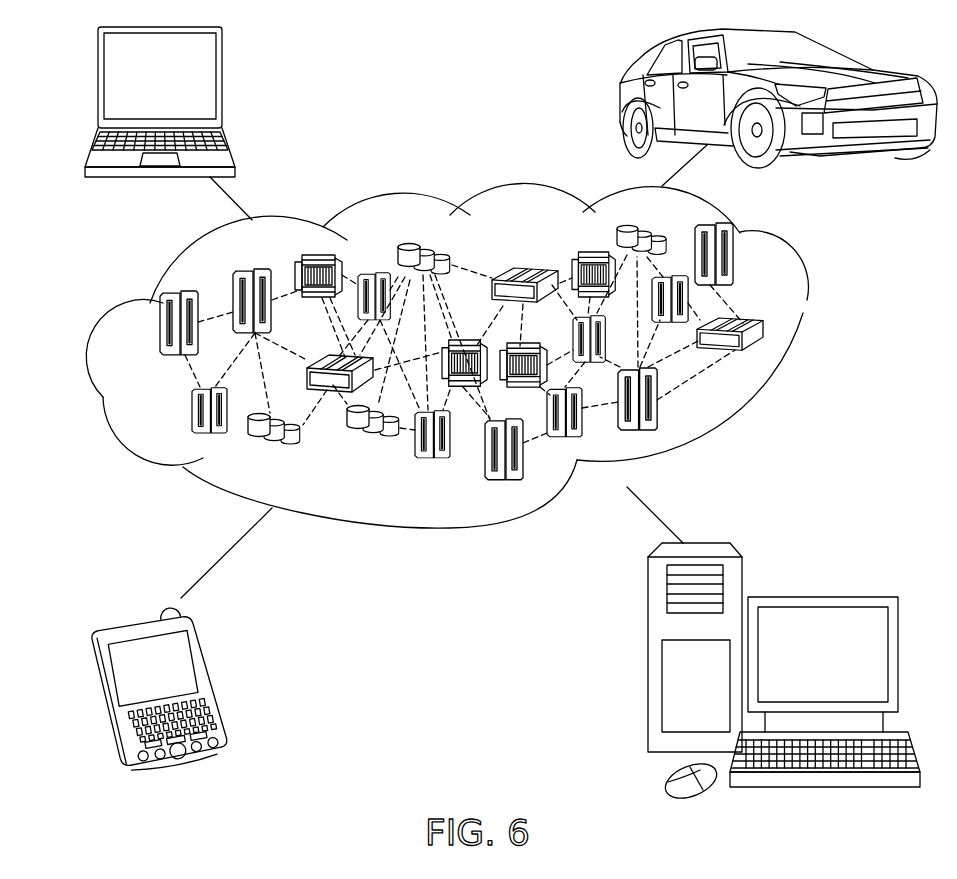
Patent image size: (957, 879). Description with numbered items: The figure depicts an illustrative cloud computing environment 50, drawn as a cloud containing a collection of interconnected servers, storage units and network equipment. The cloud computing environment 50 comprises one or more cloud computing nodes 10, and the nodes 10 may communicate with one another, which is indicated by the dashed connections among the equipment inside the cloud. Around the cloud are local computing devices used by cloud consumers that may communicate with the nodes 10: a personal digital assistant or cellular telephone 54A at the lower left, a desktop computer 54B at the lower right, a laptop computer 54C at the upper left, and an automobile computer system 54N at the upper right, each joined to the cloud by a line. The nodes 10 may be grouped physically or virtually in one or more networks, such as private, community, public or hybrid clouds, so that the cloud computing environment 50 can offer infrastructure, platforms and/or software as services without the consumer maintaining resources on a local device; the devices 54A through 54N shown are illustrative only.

The cloud computing node 10 is at (768, 361).
The cloud computing environment 50 is at (815, 332).
The personal digital assistant or cellular telephone 54A is at (212, 681).
The desktop computer 54B is at (822, 596).
The laptop computer 54C is at (223, 85).
The automobile computer system 54N is at (622, 100).